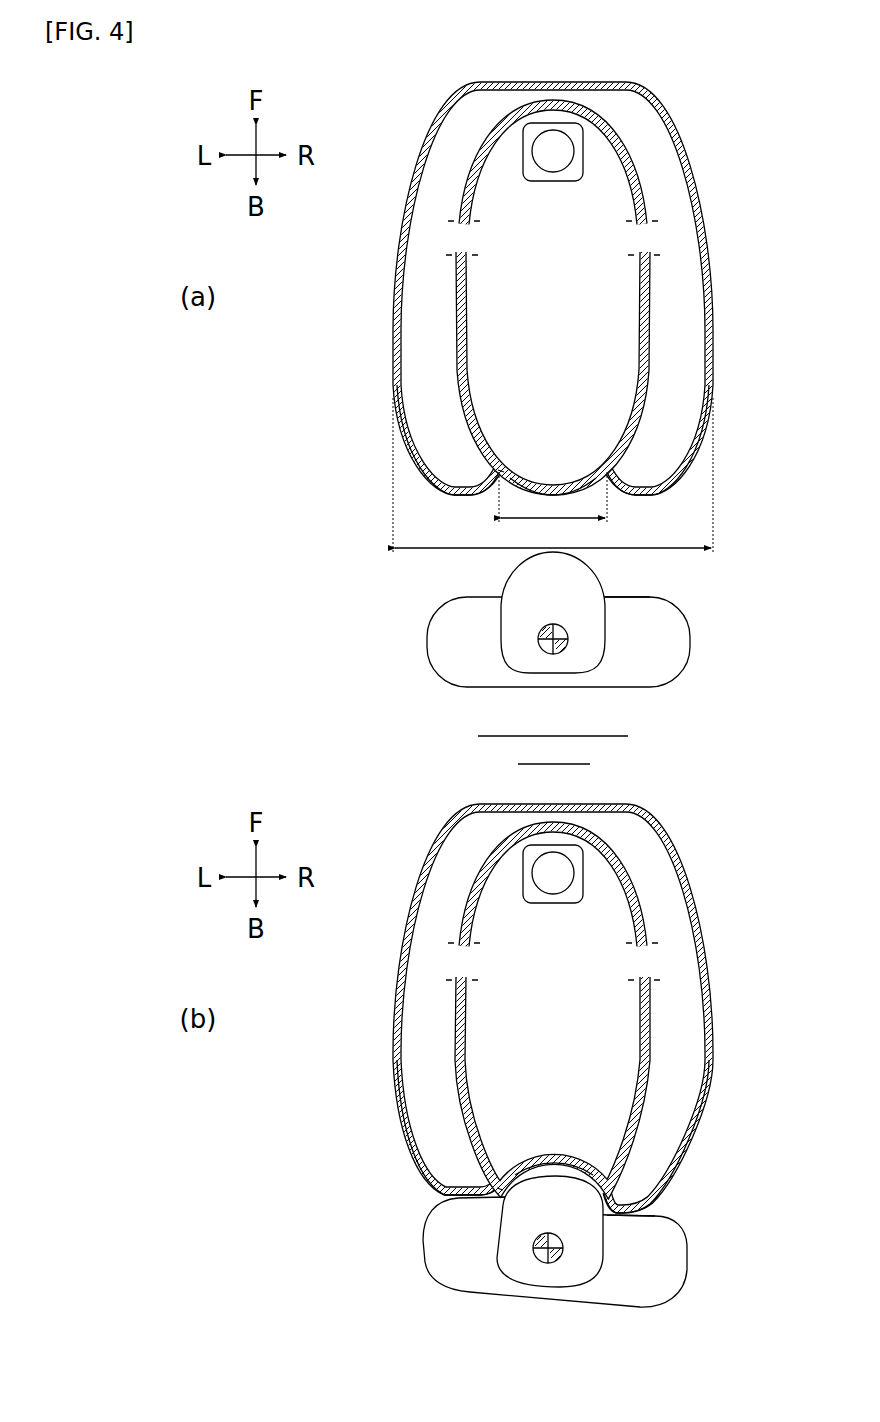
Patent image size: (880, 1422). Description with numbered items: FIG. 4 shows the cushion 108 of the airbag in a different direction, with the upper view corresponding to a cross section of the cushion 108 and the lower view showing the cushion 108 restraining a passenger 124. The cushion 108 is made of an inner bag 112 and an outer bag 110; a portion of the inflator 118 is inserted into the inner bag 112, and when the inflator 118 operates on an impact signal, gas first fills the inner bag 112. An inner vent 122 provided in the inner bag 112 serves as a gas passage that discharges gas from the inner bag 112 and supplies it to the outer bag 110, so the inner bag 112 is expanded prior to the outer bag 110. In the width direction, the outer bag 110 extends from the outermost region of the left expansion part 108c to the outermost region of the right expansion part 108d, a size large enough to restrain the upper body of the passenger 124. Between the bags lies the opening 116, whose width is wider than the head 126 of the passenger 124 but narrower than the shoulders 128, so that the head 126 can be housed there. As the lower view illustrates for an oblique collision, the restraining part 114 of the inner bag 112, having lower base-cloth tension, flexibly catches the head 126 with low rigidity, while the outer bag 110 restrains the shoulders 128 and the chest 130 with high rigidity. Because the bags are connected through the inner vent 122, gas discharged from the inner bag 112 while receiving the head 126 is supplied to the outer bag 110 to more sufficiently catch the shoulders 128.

The cushion 108 is at (375, 137).
The left expansion part 108c is at (433, 482).
The right expansion part 108d is at (642, 488).
The outer bag 110 is at (393, 312).
The inner bag 112 is at (640, 382).
The restraining part 114 is at (583, 488).
The opening 116 is at (497, 488).
The inflator 118 is at (575, 150).
The inner vent 122 is at (649, 258).
The passenger 124 is at (643, 688).
The head 126 is at (606, 636).
The shoulders 128 is at (672, 630).
The chest 130 is at (648, 597).